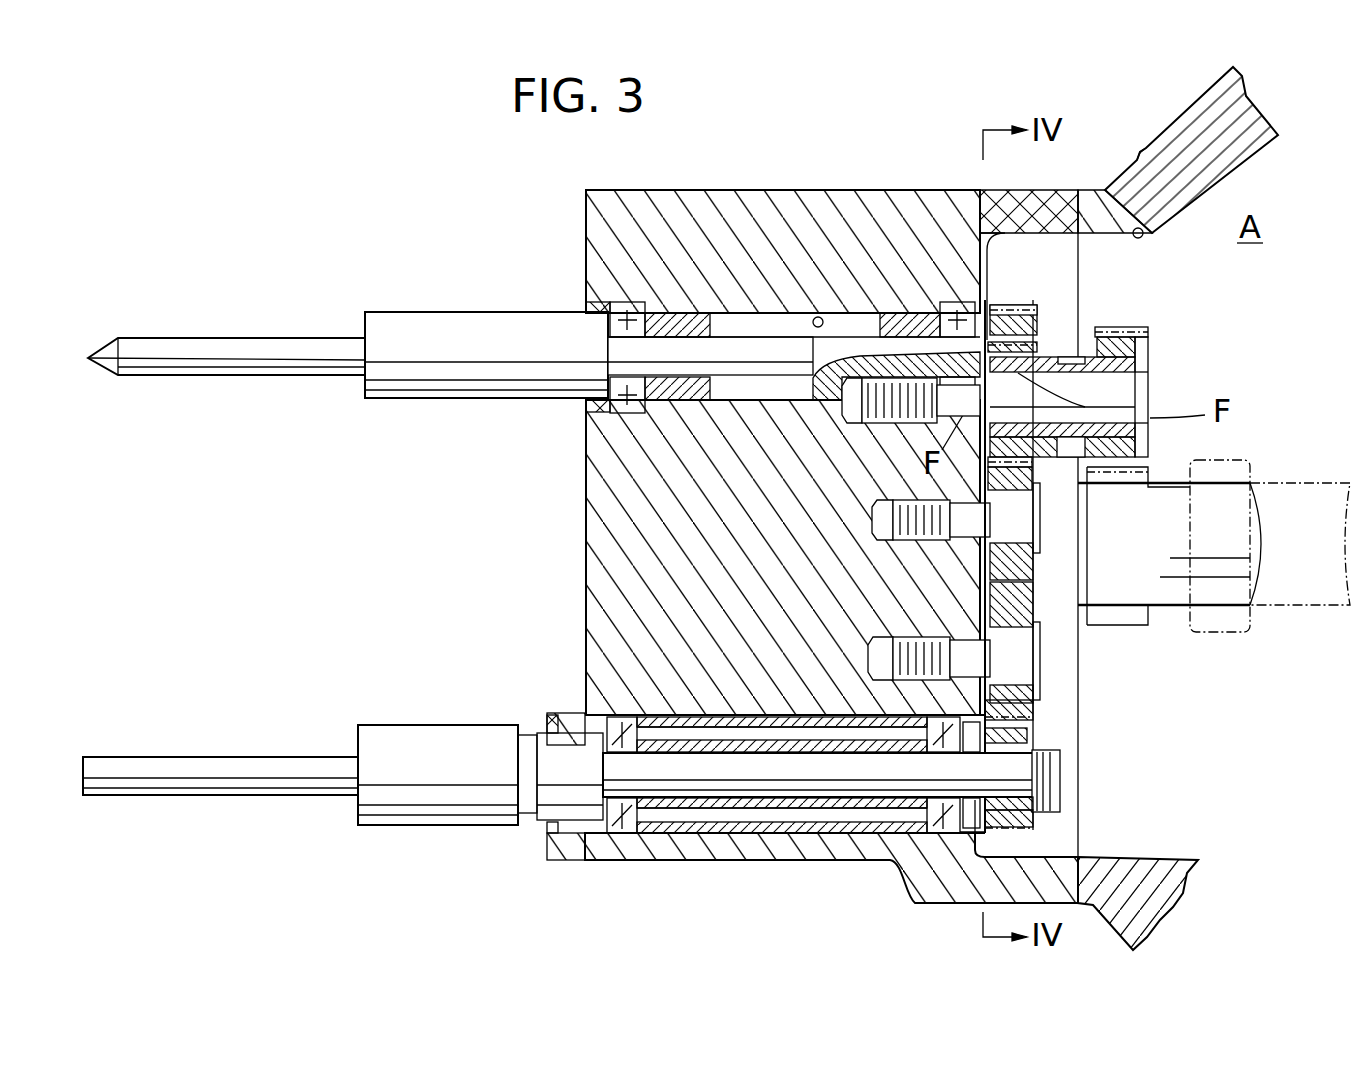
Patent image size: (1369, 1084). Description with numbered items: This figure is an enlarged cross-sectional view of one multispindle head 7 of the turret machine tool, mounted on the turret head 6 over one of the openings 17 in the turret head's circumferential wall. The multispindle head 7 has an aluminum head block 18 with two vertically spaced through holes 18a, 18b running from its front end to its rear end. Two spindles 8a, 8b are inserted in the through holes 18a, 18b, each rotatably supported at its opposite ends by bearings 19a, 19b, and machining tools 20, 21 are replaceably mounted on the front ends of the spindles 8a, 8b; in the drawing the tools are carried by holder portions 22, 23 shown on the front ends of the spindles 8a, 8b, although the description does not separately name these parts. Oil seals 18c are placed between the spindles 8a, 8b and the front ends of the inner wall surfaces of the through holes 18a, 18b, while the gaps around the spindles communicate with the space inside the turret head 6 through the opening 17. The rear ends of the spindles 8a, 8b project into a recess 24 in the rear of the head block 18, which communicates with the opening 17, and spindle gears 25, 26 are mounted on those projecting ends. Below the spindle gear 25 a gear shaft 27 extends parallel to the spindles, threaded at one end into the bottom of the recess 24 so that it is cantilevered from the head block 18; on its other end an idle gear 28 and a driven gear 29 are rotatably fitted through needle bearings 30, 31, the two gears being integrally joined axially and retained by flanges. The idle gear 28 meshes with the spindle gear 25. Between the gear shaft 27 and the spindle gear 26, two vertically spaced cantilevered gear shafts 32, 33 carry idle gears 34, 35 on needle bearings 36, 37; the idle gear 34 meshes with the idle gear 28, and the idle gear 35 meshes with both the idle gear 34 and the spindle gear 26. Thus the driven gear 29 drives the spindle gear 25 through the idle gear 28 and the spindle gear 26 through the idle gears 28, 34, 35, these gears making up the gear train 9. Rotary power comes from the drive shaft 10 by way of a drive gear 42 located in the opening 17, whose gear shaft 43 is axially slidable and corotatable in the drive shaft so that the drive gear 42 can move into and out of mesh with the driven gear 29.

The turret head 6 is at (1165, 110).
The multispindle head 7 is at (805, 188).
The spindle 8a is at (735, 345).
The spindle 8b is at (790, 800).
The gear train 9 is at (1085, 575).
The drive shaft 10 is at (1240, 655).
The opening 17 is at (1145, 215).
The head block 18 is at (878, 190).
The through hole 18a is at (830, 315).
The through hole 18b is at (680, 830).
The oil seal 18c is at (586, 415).
The bearing 19a is at (602, 305).
The bearing 19b is at (957, 300).
The machining tool 20 is at (258, 348).
The machining tool 21 is at (258, 757).
The upper collar 22 is at (420, 312).
The lower collar 23 is at (416, 725).
The recess 24 is at (1020, 260).
The spindle gear 25 is at (1050, 350).
The spindle gear 26 is at (1000, 832).
The gear shaft 27 is at (1095, 385).
The idle gear 28 is at (1150, 410).
The driven gear 29 is at (1135, 315).
The needle bearing 30 is at (1060, 360).
The needle bearing 31 is at (1145, 348).
The gear shaft 32 is at (962, 528).
The gear shaft 33 is at (962, 650).
The idle gear 34 is at (1040, 590).
The idle gear 35 is at (1015, 600).
The needle bearing 36 is at (1040, 470).
The needle bearing 37 is at (1020, 640).
The drive gear 42 is at (1125, 610).
The gear shaft 43 is at (1240, 500).